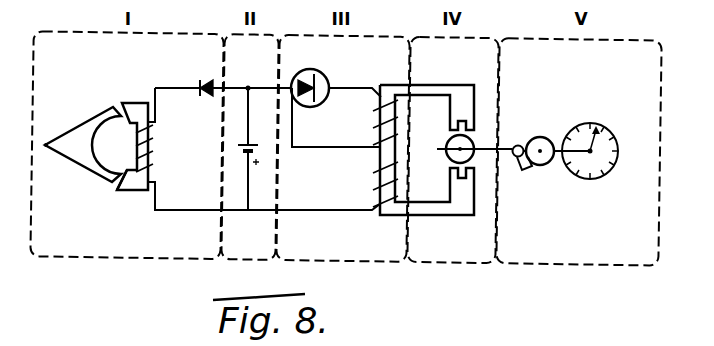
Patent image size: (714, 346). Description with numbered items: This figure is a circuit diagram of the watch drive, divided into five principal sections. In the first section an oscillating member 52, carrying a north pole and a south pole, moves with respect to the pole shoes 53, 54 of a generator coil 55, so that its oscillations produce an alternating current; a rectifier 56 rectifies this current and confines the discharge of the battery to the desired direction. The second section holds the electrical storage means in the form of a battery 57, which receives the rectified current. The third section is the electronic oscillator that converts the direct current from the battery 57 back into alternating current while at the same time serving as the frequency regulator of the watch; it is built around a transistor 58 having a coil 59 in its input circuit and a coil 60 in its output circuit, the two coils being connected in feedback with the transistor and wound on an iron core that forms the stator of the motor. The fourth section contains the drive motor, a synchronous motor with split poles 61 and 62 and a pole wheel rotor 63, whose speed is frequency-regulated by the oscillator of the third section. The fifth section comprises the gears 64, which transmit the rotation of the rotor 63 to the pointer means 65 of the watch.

The oscillating member 52 is at (60, 130).
The pole shoe 53 is at (135, 103).
The pole shoe 54 is at (128, 190).
The generator coil 55 is at (152, 150).
The rectifier 56 is at (200, 87).
The battery 57 is at (254, 133).
The transistor 58 is at (323, 82).
The coil 59 is at (377, 133).
The coil 60 is at (376, 162).
The split pole 61 is at (468, 100).
The split pole 62 is at (467, 200).
The pole wheel rotor 63 is at (472, 138).
The gears 64 is at (524, 172).
The pointer means 65 is at (607, 132).